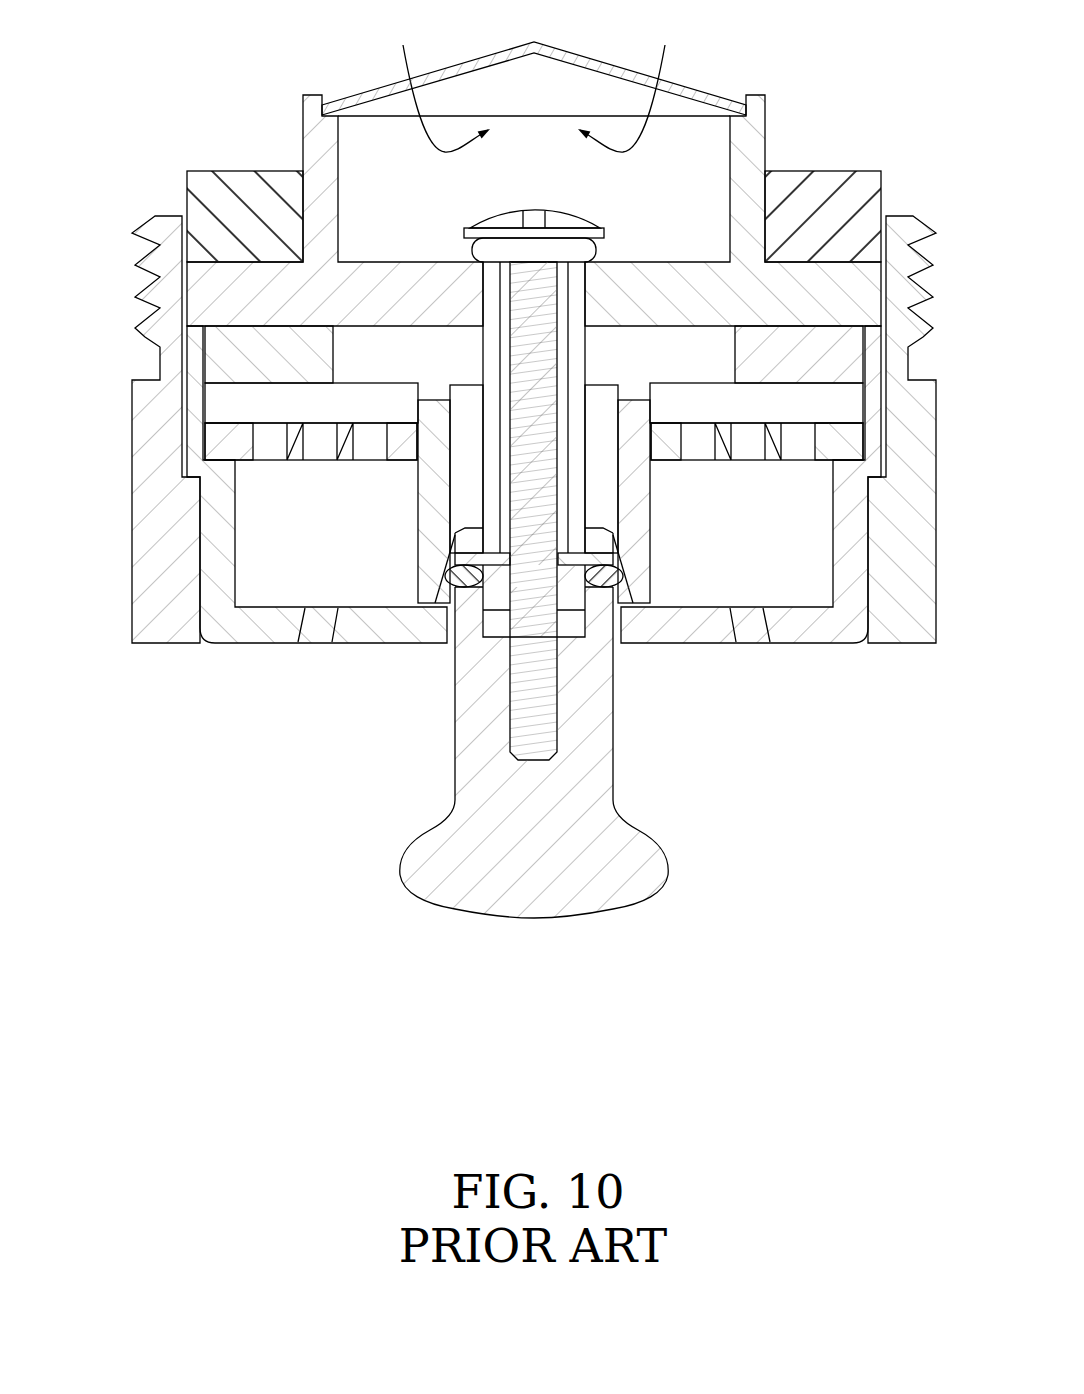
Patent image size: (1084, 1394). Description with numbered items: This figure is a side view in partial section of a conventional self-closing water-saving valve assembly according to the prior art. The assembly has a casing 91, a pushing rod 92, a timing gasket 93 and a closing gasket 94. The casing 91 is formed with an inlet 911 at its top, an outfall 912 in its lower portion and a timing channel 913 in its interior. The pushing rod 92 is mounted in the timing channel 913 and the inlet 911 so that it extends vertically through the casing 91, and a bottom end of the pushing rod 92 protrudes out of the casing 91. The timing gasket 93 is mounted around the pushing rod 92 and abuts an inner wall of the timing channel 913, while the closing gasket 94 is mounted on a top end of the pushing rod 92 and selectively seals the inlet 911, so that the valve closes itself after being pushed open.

The casing 91 is at (133, 372).
The inlet 911 is at (500, 268).
The outfall 912 is at (765, 628).
The timing channel 913 is at (455, 477).
The pushing rod 92 is at (420, 901).
The timing gasket 93 is at (607, 578).
The closing gasket 94 is at (597, 250).